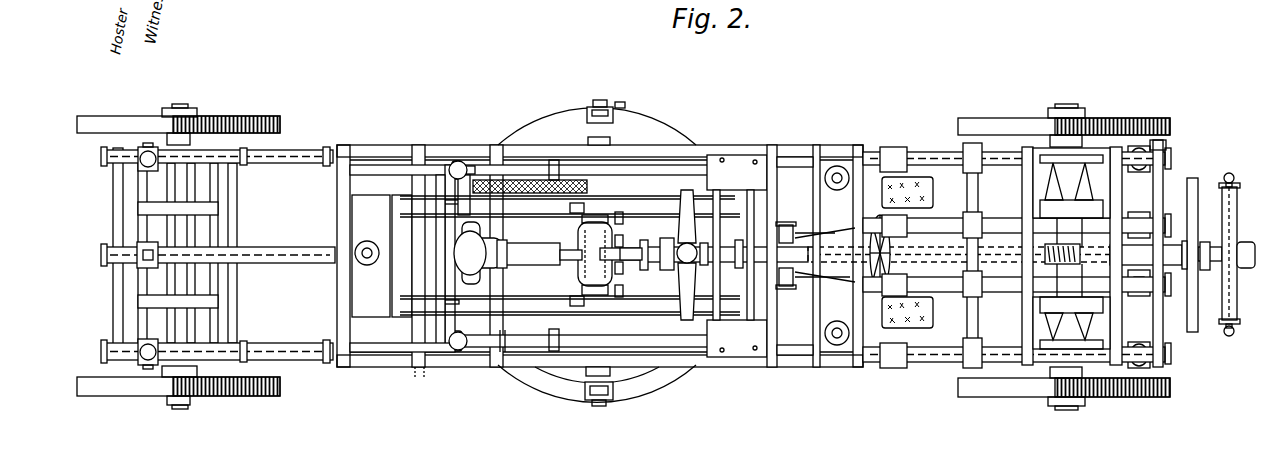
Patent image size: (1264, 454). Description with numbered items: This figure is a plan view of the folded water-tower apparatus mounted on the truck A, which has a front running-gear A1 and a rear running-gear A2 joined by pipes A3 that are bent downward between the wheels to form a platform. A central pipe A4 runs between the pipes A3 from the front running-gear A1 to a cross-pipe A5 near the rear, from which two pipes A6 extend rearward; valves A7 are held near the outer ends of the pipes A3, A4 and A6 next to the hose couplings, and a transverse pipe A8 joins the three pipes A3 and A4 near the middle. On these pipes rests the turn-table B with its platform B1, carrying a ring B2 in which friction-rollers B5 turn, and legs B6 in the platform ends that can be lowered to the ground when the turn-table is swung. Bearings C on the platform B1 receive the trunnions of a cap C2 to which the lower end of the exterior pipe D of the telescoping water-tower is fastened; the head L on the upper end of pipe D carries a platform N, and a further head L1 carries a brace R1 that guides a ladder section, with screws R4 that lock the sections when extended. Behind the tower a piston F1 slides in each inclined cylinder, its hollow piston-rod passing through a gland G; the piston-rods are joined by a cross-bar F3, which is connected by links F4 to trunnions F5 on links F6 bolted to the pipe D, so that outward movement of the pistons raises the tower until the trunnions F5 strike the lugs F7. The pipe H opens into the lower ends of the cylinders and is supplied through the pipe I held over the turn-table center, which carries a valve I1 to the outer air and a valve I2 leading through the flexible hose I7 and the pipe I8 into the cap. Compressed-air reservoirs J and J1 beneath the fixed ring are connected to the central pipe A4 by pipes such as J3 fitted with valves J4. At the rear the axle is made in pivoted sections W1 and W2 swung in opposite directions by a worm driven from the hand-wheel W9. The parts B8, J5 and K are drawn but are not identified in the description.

The truck A is at (345, 146).
The front running-gear A1 is at (200, 118).
The rear running-gear A2 is at (1090, 118).
The pipes A3 is at (296, 160).
The pipe A4 is at (314, 262).
The cross-pipe A5 is at (934, 182).
The pipes A6 is at (948, 225).
The valves A7 is at (142, 160).
The transverse pipe A8 is at (585, 372).
The turn-table B is at (492, 152).
The platform B1 is at (417, 150).
The ring B2 is at (566, 116).
The friction-rollers B5 is at (615, 112).
The legs B6 is at (367, 241).
The bracket B8 is at (612, 95).
The bearings C is at (470, 296).
The cap C2 is at (438, 270).
The exterior pipe D is at (540, 262).
The piston F1 is at (530, 330).
The cross-bar F3 is at (395, 176).
The links F4 is at (548, 200).
The trunnions F5 is at (668, 270).
The links F6 is at (695, 255).
The lugs F7 is at (455, 322).
The gland G is at (458, 350).
The pipe H is at (708, 266).
The pipe I is at (592, 262).
The valve I1 is at (643, 270).
The valve I2 is at (600, 252).
The flexible hose I7 is at (530, 178).
The pipe I8 is at (460, 222).
The reservoir J is at (764, 256).
The reservoir J1 is at (779, 232).
The pipe J3 is at (825, 253).
The valve J4 is at (787, 222).
The lower bearing J5 is at (795, 282).
The collar K is at (732, 260).
The head L is at (1199, 243).
The head L1 is at (1212, 270).
The platform N is at (1192, 334).
The brace R1 is at (1230, 232).
The screws R4 is at (1228, 174).
The axle section W1 is at (1062, 188).
The axle section W2 is at (1062, 328).
The hand-wheel W9 is at (875, 225).